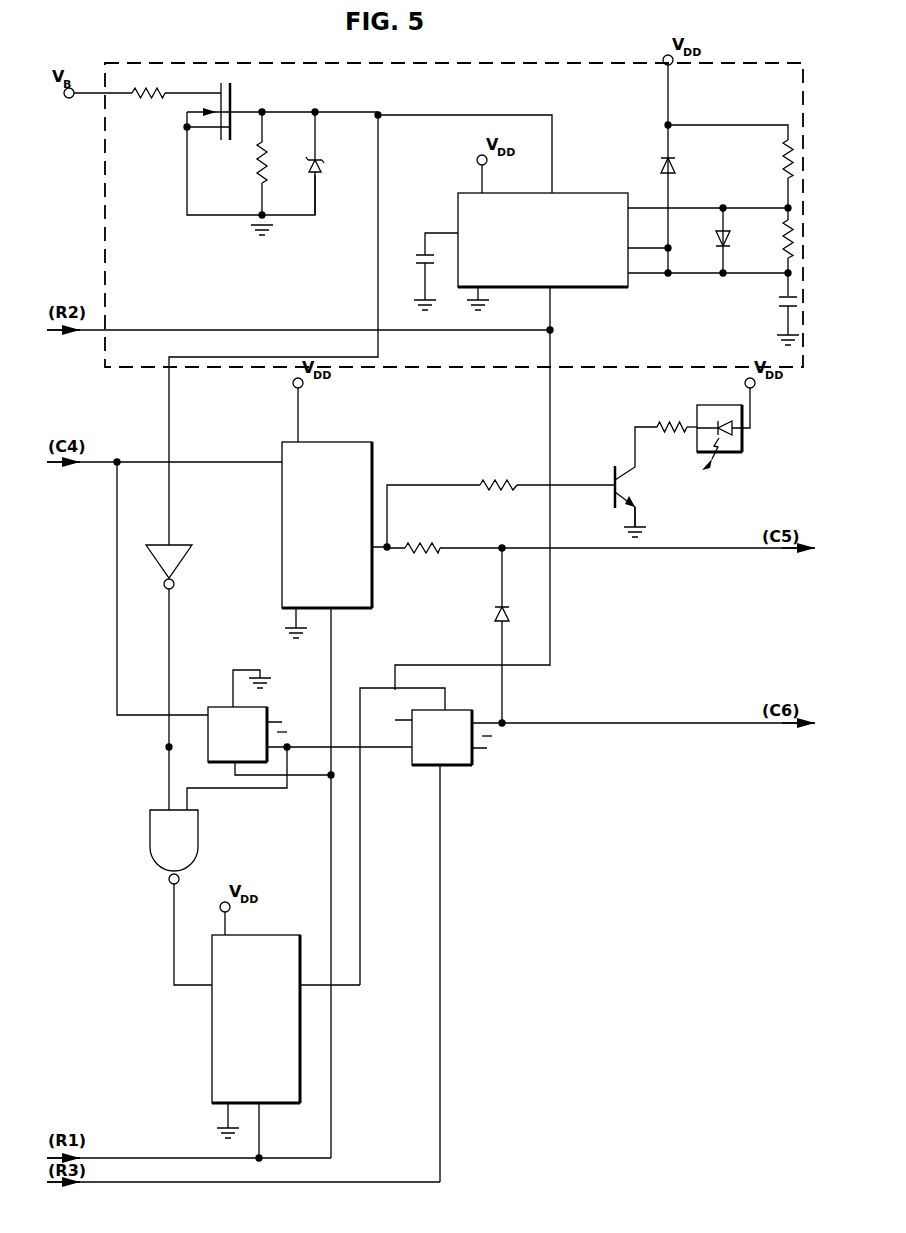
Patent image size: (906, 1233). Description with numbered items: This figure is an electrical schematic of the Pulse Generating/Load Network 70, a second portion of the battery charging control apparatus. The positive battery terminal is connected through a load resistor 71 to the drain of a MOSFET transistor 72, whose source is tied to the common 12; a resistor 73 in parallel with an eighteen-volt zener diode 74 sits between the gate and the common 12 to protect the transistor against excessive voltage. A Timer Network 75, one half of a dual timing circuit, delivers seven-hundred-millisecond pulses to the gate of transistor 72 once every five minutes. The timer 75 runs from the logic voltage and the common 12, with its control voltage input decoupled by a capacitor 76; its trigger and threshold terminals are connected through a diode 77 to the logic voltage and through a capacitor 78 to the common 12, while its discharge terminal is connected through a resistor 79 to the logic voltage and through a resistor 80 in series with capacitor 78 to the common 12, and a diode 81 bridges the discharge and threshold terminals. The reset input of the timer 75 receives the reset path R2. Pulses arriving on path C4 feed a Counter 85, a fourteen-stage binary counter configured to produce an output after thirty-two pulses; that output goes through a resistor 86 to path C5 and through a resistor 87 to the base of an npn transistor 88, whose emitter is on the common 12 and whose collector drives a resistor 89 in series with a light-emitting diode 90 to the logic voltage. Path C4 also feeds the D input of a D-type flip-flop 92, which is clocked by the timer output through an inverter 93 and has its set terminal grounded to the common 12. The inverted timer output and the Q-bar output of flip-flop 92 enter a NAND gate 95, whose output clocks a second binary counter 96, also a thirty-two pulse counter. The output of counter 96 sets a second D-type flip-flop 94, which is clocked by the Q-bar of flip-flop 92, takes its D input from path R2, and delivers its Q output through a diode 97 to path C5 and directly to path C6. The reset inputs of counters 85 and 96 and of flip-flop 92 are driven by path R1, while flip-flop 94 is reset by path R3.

The common 12 is at (271, 228).
The Pulse Generating/Load Network 70 is at (240, 62).
The load resistor 71 is at (164, 103).
The MOSFET transistor 72 is at (232, 108).
The resistor 73 is at (258, 164).
The zener diode 74 is at (322, 164).
The Timer Network 75 is at (611, 190).
The capacitor 76 is at (412, 264).
The diode 77 is at (672, 164).
The capacitor 78 is at (775, 298).
The resistor 79 is at (782, 153).
The resistor 80 is at (782, 230).
The diode 81 is at (718, 232).
The Counter 85 is at (373, 448).
The resistor 86 is at (415, 546).
The resistor 87 is at (483, 492).
The npn transistor 88 is at (634, 479).
The resistor 89 is at (662, 420).
The light-emitting diode 90 is at (742, 442).
The D-type flip-flop 92 is at (223, 707).
The inverter 93 is at (178, 546).
The second D-type flip-flop 94 is at (473, 765).
The NAND gate 95 is at (188, 849).
The second binary counter 96 is at (212, 1043).
The diode 97 is at (490, 608).